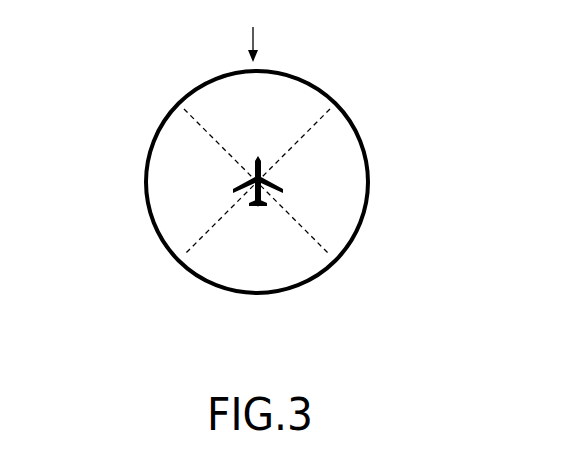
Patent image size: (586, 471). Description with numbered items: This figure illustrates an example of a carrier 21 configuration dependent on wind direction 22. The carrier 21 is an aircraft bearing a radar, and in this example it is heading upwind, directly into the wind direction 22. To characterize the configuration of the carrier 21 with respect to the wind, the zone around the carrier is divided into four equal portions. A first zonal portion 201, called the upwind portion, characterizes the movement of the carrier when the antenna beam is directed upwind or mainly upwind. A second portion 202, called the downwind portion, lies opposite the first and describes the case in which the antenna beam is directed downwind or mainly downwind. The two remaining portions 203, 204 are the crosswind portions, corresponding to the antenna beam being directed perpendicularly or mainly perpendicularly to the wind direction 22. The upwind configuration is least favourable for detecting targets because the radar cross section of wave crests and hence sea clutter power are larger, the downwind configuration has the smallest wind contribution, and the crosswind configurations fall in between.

The carrier 21 is at (268, 175).
The wind direction 22 is at (252, 43).
The first zonal portion 201 is at (298, 100).
The second portion 202 is at (267, 273).
The crosswind portion 203 is at (190, 157).
The crosswind portion 204 is at (346, 201).